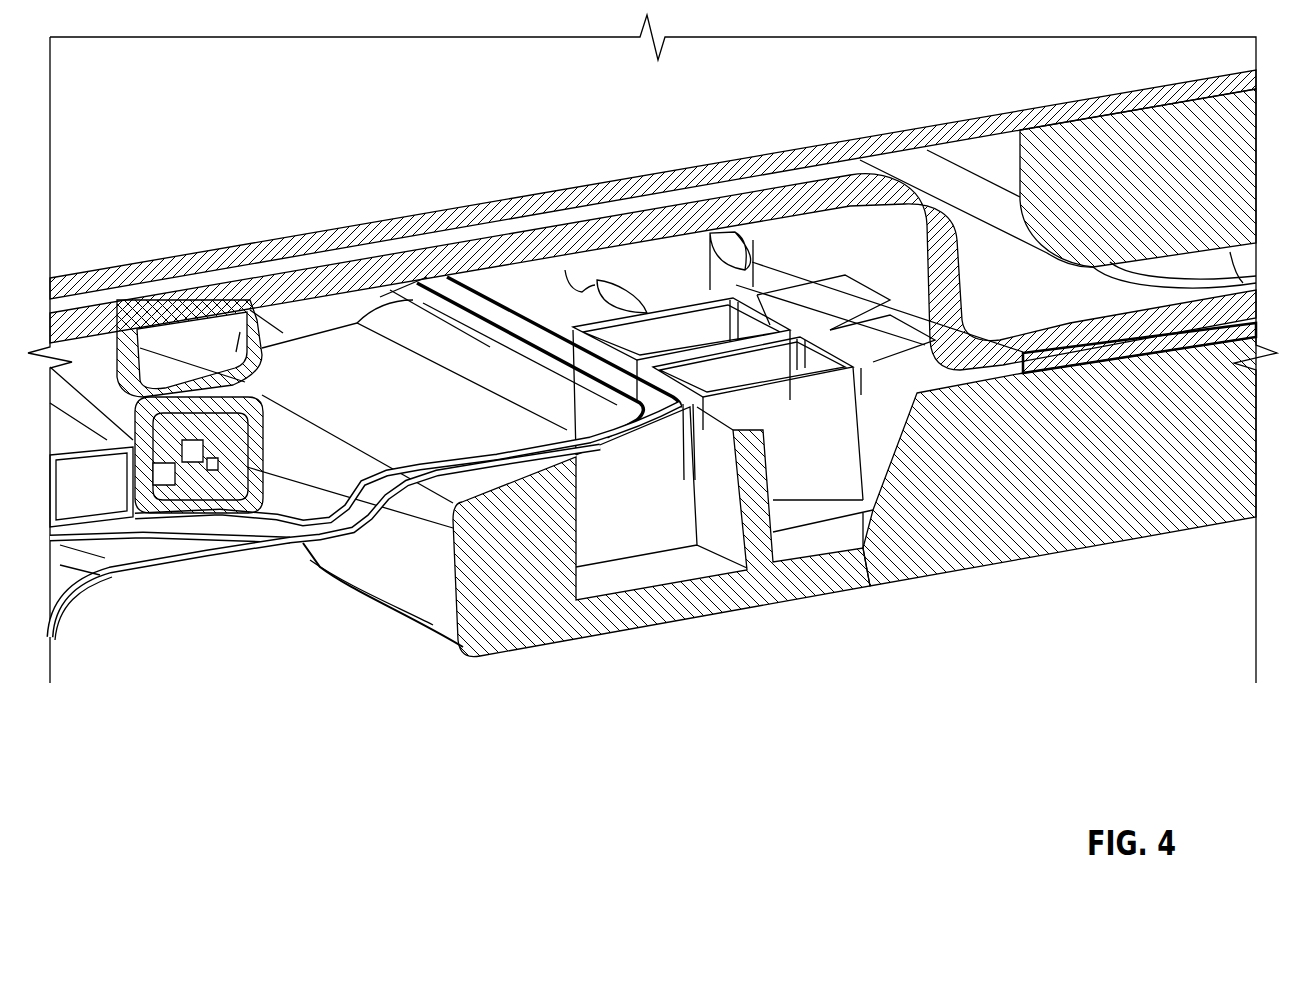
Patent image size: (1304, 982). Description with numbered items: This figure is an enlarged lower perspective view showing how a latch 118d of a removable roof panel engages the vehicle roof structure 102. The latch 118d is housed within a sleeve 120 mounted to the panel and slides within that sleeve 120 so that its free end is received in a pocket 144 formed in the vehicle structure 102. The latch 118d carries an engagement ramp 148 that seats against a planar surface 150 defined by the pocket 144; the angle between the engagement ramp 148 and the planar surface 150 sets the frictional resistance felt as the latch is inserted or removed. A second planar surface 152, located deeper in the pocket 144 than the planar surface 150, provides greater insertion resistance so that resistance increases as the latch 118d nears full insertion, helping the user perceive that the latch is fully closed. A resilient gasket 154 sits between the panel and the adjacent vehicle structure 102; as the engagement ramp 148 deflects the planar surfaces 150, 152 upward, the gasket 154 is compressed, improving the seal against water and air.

The vehicle roof structure 102 is at (200, 545).
The latch 118d is at (362, 288).
The sleeve 120 is at (1130, 350).
The pocket 144 is at (453, 488).
The engagement ramp 148 is at (475, 487).
The planar surface 150 is at (593, 460).
The second planar surface 152 is at (400, 505).
The gasket 154 is at (240, 332).